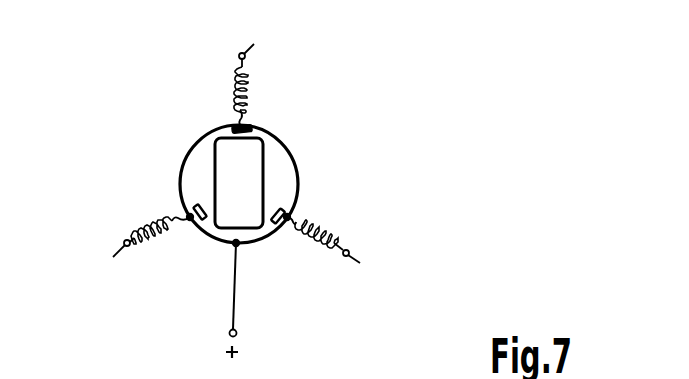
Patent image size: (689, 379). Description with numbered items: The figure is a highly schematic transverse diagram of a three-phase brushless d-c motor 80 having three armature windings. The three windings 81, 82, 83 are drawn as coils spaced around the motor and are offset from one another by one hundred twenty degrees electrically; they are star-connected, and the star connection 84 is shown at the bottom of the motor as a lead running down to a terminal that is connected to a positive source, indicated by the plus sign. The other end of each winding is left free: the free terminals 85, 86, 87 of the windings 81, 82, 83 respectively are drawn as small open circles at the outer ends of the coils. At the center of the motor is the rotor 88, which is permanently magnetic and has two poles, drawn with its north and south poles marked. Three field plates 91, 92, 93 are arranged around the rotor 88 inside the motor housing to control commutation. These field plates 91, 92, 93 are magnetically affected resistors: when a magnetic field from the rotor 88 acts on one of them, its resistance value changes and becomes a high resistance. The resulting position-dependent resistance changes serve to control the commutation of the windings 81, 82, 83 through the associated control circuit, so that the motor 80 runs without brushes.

The brushless d-c motor 80 is at (96, 98).
The winding 81 is at (247, 98).
The winding 82 is at (330, 240).
The winding 83 is at (160, 232).
The star connection 84 is at (236, 282).
The free terminal of winding 85 is at (257, 46).
The free terminal of winding 86 is at (364, 262).
The free terminal of winding 87 is at (108, 257).
The rotor 88 is at (252, 160).
The field plate 91 is at (252, 128).
The field plate 92 is at (284, 211).
The field plate 93 is at (197, 220).